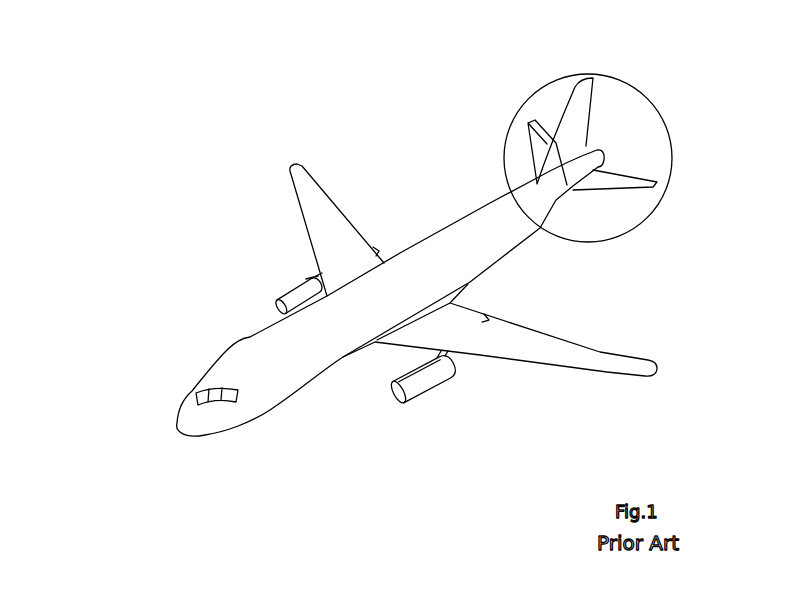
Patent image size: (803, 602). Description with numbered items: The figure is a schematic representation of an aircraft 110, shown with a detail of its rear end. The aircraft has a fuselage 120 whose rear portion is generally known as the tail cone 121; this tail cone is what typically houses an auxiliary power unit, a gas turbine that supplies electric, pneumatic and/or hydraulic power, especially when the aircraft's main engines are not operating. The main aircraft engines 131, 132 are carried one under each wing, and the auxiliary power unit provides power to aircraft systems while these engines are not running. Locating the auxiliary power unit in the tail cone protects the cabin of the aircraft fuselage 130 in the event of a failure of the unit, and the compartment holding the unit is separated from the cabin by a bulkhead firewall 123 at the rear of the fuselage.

The aircraft 110 is at (180, 368).
The fuselage 120 is at (642, 222).
The tail cone 121 is at (600, 142).
The bulkhead firewall 123 is at (562, 190).
The aircraft fuselage 130 is at (412, 267).
The main aircraft engine 131 is at (420, 390).
The main aircraft engine 132 is at (280, 297).